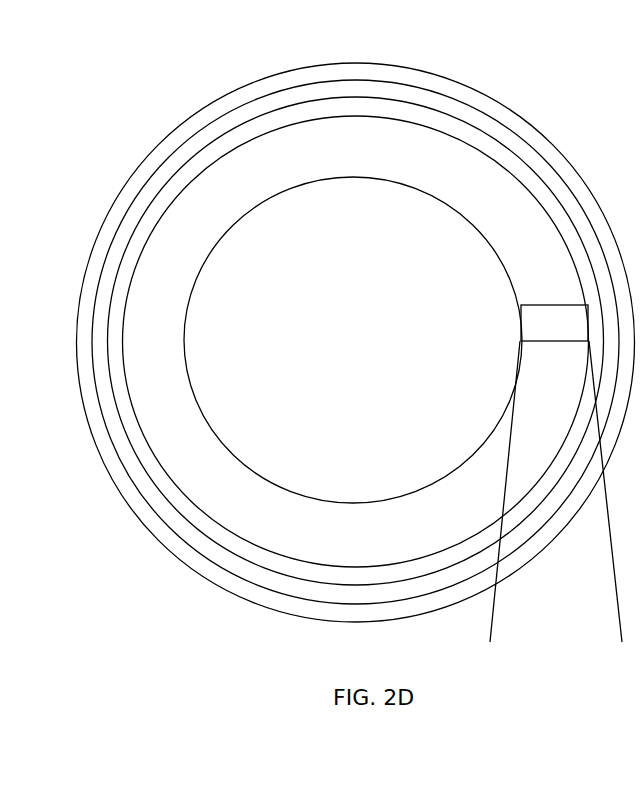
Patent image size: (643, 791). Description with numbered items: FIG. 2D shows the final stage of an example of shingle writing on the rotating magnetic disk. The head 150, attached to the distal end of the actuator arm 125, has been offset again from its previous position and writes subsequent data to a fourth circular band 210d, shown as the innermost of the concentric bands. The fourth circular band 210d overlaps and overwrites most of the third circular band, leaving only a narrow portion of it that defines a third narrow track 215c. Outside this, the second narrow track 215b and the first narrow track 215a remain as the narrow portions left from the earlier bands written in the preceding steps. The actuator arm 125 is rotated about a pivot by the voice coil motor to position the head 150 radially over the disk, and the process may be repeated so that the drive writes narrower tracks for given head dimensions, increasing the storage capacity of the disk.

The first narrow track 215a is at (175, 143).
The second narrow track 215b is at (158, 175).
The third narrow track 215c is at (147, 220).
The fourth circular band 210d is at (158, 280).
The head 150 is at (520, 322).
The actuator arm 125 is at (490, 625).